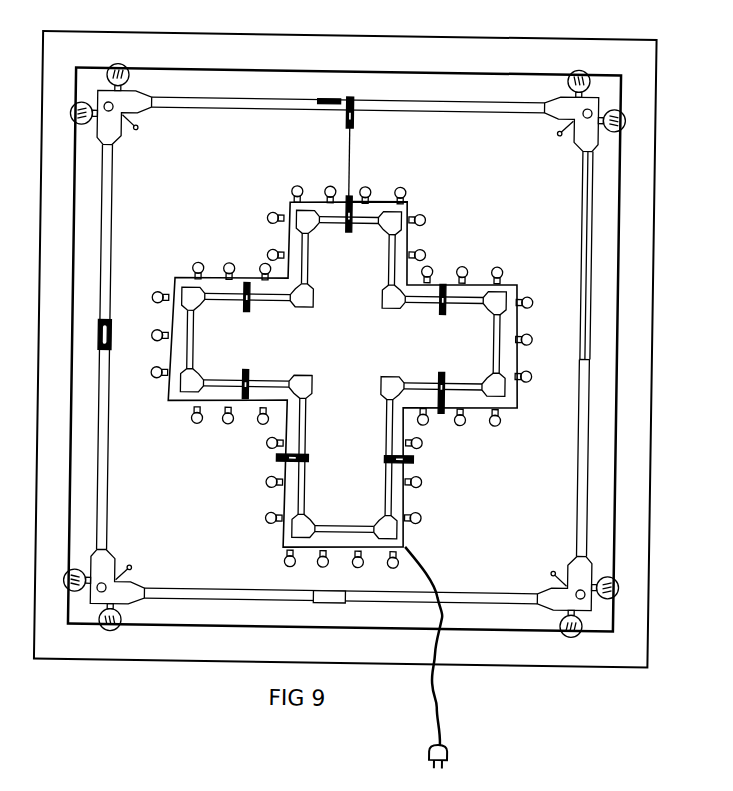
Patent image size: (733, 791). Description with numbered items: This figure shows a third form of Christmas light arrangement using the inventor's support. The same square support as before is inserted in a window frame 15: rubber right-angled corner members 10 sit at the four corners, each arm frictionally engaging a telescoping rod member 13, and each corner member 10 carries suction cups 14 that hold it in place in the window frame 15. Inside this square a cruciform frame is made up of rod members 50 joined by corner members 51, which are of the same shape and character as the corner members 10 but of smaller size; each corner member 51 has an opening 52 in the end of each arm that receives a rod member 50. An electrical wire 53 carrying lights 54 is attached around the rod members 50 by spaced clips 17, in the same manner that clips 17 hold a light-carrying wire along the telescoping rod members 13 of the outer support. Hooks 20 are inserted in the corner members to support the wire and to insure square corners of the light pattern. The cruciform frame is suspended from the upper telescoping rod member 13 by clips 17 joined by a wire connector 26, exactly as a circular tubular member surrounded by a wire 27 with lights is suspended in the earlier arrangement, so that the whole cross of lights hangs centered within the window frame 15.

The corner member 10 is at (122, 593).
The telescoping rod member 13 is at (583, 408).
The suction cup 14 is at (561, 75).
The window frame 15 is at (646, 244).
The clamp 17 is at (342, 115).
The hook member 20 is at (281, 406).
The wire 26 is at (349, 175).
The wire 27 is at (441, 311).
The rod member 50 is at (269, 298).
The corner member 51 is at (388, 224).
The opening 52 is at (198, 374).
The electrical wire 53 is at (379, 198).
The light 54 is at (398, 196).